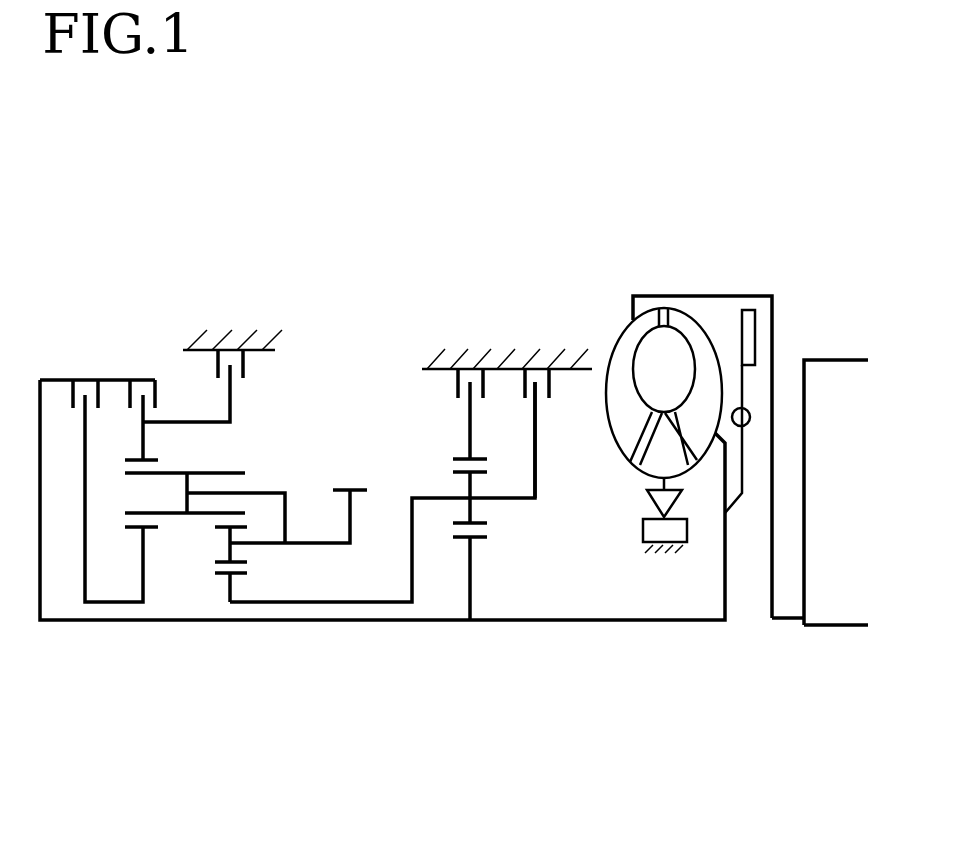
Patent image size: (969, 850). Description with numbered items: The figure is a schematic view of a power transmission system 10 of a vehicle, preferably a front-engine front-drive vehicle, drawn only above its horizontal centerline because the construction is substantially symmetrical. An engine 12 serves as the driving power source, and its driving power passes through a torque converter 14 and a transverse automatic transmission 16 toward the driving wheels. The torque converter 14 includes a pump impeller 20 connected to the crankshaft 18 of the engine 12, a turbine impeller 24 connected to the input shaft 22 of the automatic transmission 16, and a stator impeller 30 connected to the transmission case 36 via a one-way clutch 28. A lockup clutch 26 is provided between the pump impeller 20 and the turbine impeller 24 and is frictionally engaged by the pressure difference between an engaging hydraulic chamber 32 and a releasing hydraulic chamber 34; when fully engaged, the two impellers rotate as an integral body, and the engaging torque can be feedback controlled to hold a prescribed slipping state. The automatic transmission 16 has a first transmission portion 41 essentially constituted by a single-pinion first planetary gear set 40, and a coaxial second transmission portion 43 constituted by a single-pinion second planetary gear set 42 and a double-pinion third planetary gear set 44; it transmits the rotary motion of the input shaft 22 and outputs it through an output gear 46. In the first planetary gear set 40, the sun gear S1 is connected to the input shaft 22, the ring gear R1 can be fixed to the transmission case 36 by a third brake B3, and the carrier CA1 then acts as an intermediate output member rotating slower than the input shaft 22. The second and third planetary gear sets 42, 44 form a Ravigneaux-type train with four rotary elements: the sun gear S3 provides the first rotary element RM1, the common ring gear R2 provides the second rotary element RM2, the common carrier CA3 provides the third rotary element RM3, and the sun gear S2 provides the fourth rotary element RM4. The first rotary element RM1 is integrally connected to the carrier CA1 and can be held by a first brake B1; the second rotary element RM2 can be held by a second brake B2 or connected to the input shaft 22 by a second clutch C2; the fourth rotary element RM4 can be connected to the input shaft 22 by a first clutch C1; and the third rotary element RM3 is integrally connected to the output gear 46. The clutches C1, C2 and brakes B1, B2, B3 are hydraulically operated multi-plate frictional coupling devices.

The power transmission system 10 is at (636, 198).
The engine 12 is at (838, 625).
The torque converter 14 is at (744, 253).
The automatic transmission 16 is at (465, 280).
The crankshaft 18 is at (783, 620).
The pump impeller 20 is at (630, 342).
The input shaft 22 is at (565, 622).
The turbine impeller 24 is at (690, 337).
The lockup clutch 26 is at (757, 322).
The one-way clutch 28 is at (666, 498).
The stator impeller 30 is at (645, 473).
The engaging hydraulic chamber 32 is at (727, 306).
The releasing hydraulic chamber 34 is at (757, 378).
The transmission case 36 is at (656, 550).
The first planetary gear set 40 is at (465, 637).
The first transmission portion 41 is at (400, 376).
The second planetary gear set 42 is at (142, 627).
The second transmission portion 43 is at (305, 327).
The third planetary gear set 44 is at (233, 627).
The output gear 46 is at (357, 490).
The first clutch C1 is at (82, 380).
The second clutch C2 is at (142, 380).
The first brake B1 is at (564, 388).
The second brake B2 is at (251, 370).
The third brake B3 is at (454, 388).
The first rotary element RM1 is at (302, 602).
The second rotary element RM2 is at (186, 418).
The third rotary element RM3 is at (314, 543).
The fourth rotary element RM4 is at (145, 570).
The ring gear R1 is at (478, 458).
The ring gear R2 is at (150, 460).
The sun gear S1 is at (480, 538).
The sun gear S2 is at (148, 529).
The sun gear S3 is at (240, 573).
The carrier CA1 is at (652, 460).
The carrier CA3 is at (258, 493).